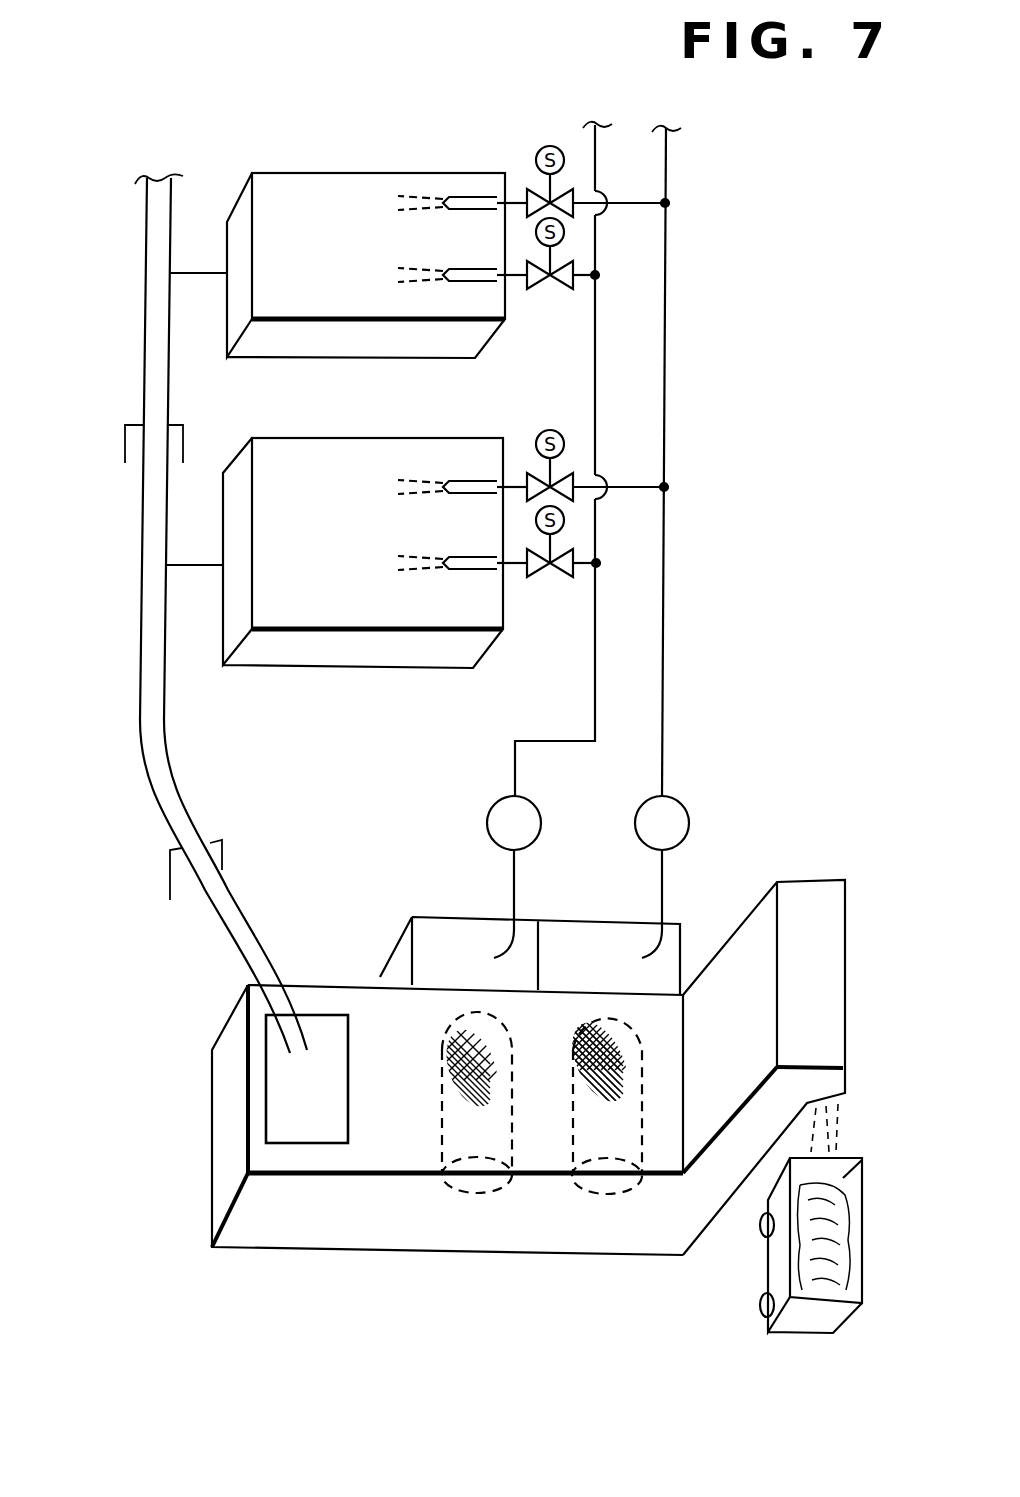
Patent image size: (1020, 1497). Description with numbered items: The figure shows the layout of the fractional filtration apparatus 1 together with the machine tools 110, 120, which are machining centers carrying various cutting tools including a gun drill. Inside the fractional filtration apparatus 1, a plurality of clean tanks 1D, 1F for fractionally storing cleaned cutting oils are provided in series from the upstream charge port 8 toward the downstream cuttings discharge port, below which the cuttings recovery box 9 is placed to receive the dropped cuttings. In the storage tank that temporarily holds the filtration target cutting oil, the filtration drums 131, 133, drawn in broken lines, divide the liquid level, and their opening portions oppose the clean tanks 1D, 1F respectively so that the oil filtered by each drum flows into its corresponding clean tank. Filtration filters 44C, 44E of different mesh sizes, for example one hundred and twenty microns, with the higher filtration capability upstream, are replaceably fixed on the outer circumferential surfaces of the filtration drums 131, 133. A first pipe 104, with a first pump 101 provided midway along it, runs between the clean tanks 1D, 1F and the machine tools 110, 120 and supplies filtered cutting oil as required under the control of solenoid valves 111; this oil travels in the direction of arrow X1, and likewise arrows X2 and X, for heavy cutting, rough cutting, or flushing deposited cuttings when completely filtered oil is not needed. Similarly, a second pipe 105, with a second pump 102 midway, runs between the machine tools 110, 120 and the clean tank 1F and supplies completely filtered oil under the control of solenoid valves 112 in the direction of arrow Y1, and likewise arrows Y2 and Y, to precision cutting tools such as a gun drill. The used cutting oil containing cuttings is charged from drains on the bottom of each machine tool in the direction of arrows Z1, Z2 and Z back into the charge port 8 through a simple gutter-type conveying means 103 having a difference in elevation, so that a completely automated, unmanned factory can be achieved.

The fractional filtration apparatus 1 is at (491, 1083).
The clean tank 1D is at (440, 947).
The clean tank 1F is at (590, 955).
The charge port 8 is at (265, 1098).
The cuttings recovery box 9 is at (845, 1203).
The filtration filter 44C is at (463, 1195).
The filtration filter 44E is at (603, 1197).
The first pump 101 is at (493, 806).
The second pump 102 is at (673, 800).
The gutter-type conveying means 103 is at (147, 758).
The first pipe 104 is at (597, 709).
The second pipe 105 is at (664, 696).
The machine tool 110 is at (375, 440).
The solenoid valve 111 is at (541, 289).
The solenoid valve 112 is at (529, 192).
The machine tool 120 is at (378, 178).
The filtration drum 131 is at (456, 1078).
The filtration drum 133 is at (590, 1085).
The flow X is at (503, 878).
The flow Y is at (671, 905).
The flow Z is at (298, 1050).
The arrow X1 is at (562, 593).
The flow X2 is at (558, 307).
The arrow Y1 is at (626, 505).
The flow Y2 is at (626, 220).
The arrow Z1 is at (198, 578).
The flow Z2 is at (207, 283).